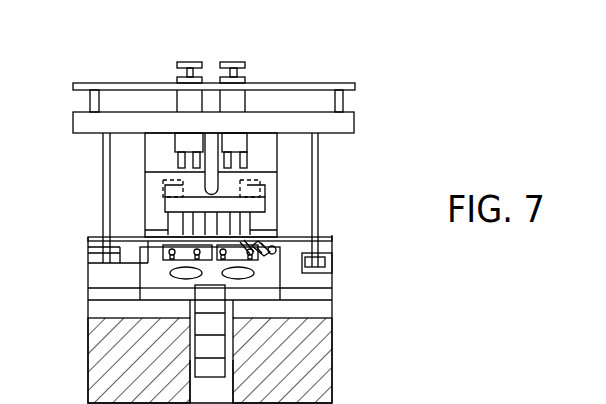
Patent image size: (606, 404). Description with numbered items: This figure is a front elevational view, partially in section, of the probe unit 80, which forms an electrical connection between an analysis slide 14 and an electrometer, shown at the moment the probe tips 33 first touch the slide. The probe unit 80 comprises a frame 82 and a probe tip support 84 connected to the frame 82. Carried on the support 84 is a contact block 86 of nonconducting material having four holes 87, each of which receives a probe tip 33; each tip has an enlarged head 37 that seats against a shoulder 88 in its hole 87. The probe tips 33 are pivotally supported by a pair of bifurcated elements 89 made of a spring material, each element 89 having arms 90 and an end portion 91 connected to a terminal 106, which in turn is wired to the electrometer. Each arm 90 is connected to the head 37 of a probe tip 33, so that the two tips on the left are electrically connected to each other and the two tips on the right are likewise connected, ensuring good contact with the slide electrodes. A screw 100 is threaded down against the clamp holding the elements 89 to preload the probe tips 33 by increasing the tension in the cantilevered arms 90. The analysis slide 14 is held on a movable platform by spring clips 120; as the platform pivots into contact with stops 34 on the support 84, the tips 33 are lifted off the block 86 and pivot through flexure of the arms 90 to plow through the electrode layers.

The probe unit 80 is at (323, 57).
The frame 82 is at (353, 112).
The terminal 106 is at (227, 62).
The probe tip support 84 is at (322, 208).
The arm 90 is at (158, 220).
The end portion 91 is at (190, 160).
The screw 100 is at (227, 163).
The bifurcated element 89 is at (170, 160).
The enlarged head 37 is at (255, 228).
The shoulder 88 is at (270, 250).
The contact block 86 is at (322, 254).
The hole 87 is at (268, 260).
The spring clip 120 is at (258, 252).
The stop 34 is at (103, 262).
The analysis slide 14 is at (167, 293).
The probe tip 33 is at (310, 322).